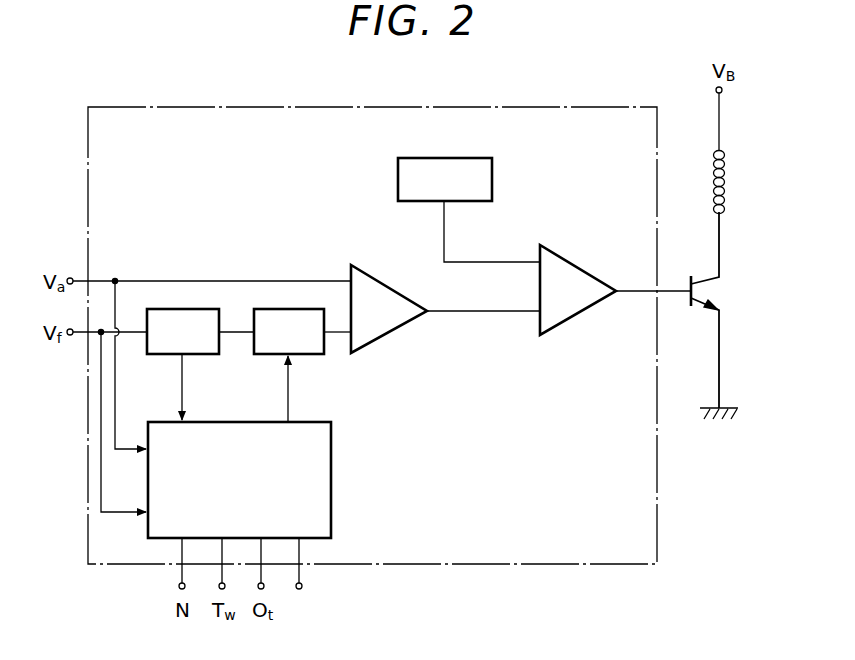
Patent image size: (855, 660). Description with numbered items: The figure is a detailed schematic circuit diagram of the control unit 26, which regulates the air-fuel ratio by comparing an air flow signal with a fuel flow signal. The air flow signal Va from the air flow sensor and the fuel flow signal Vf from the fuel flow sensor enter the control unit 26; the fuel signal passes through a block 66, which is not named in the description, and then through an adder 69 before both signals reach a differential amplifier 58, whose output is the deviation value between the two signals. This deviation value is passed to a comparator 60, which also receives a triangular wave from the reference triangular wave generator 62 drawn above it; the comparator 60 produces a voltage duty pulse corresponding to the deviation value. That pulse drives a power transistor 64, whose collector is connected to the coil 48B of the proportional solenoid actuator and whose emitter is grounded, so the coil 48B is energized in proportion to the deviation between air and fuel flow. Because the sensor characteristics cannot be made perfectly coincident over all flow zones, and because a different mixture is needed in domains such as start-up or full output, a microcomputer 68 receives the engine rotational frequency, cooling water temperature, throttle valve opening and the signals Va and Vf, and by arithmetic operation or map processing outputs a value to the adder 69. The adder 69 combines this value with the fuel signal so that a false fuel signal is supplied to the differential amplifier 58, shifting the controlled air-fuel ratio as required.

The control unit 26 is at (608, 566).
The differential amplifier 58 is at (390, 325).
The comparator 60 is at (572, 305).
The reference triangular wave generator 62 is at (492, 170).
The power transistor 64 is at (710, 292).
The signal processing circuit 66 is at (207, 355).
The microcomputer 68 is at (331, 483).
The adder 69 is at (314, 355).
The coil 48B is at (728, 180).